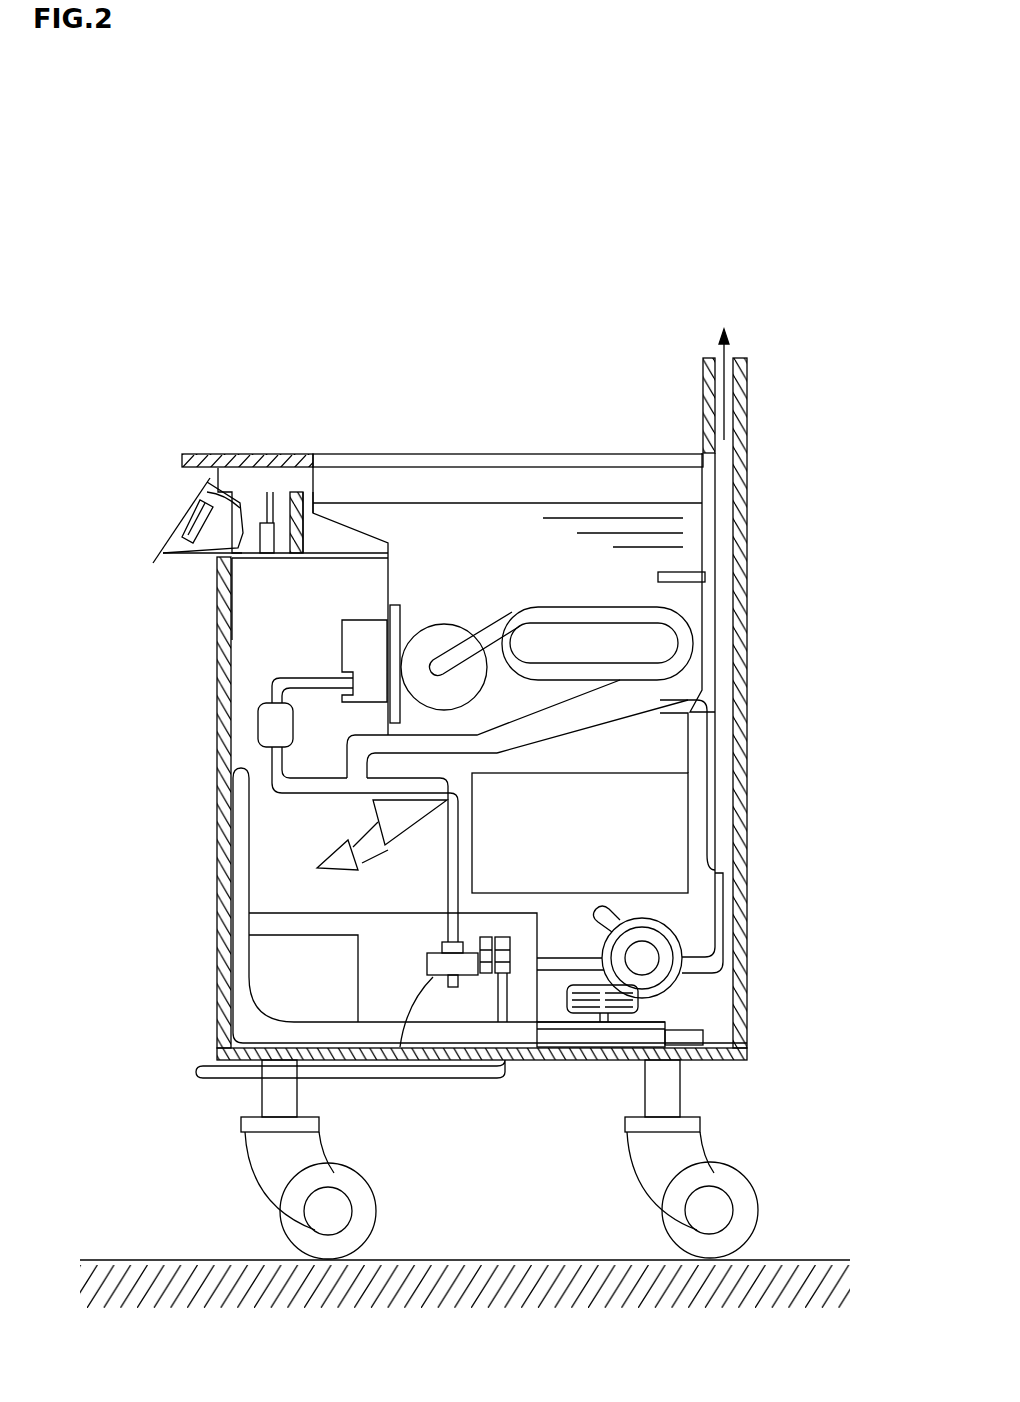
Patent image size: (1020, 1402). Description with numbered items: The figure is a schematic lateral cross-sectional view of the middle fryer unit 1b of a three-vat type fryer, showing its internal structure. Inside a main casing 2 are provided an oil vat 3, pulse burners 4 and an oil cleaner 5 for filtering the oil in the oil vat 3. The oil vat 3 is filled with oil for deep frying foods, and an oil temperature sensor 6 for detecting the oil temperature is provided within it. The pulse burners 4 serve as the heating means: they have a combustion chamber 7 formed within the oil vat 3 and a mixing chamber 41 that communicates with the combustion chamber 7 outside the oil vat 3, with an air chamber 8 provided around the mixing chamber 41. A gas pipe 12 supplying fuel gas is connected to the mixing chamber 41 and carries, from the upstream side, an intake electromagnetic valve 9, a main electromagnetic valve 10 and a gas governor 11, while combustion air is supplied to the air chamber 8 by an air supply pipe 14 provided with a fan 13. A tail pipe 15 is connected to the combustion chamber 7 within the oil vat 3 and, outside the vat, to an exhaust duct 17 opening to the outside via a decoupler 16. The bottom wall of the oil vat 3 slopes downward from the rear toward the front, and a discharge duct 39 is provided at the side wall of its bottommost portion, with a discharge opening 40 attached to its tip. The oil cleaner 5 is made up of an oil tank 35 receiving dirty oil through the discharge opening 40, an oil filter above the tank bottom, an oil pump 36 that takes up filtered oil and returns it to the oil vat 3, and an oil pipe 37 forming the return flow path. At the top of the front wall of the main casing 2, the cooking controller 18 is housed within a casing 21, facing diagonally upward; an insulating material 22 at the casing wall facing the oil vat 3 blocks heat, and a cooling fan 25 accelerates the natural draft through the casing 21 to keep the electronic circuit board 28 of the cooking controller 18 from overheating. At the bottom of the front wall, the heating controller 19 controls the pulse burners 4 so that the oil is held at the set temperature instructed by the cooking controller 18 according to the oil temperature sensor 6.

The middle fryer unit 1b is at (442, 372).
The main casing 2 is at (748, 862).
The oil vat 3 is at (360, 520).
The pulse burners 4 is at (203, 752).
The oil cleaner 5 is at (773, 977).
The oil temperature sensor 6 is at (668, 577).
The combustion chamber 7 is at (428, 632).
The air chamber 8 is at (260, 633).
The intake electromagnetic valve 9 is at (507, 975).
The main electromagnetic valve 10 is at (482, 977).
The gas governor 11 is at (433, 977).
The gas pipe 12 is at (227, 1077).
The fan 13 is at (583, 1050).
The air supply pipe 14 is at (240, 1015).
The tail pipe 15 is at (605, 613).
The decoupler 16 is at (657, 807).
The exhaust duct 17 is at (748, 656).
The cooking controller 18 is at (172, 552).
The heating controller 19 is at (262, 958).
The casing 21 is at (207, 553).
The insulating material 22 is at (313, 490).
The cooling fan 25 is at (268, 523).
The electronic circuit board 28 is at (190, 523).
The oil tank 35 is at (385, 993).
The oil pump 36 is at (690, 988).
The oil pipe 37 is at (722, 940).
The discharge duct 39 is at (272, 783).
The discharge opening 40 is at (317, 868).
The mixing chamber 41 is at (342, 663).